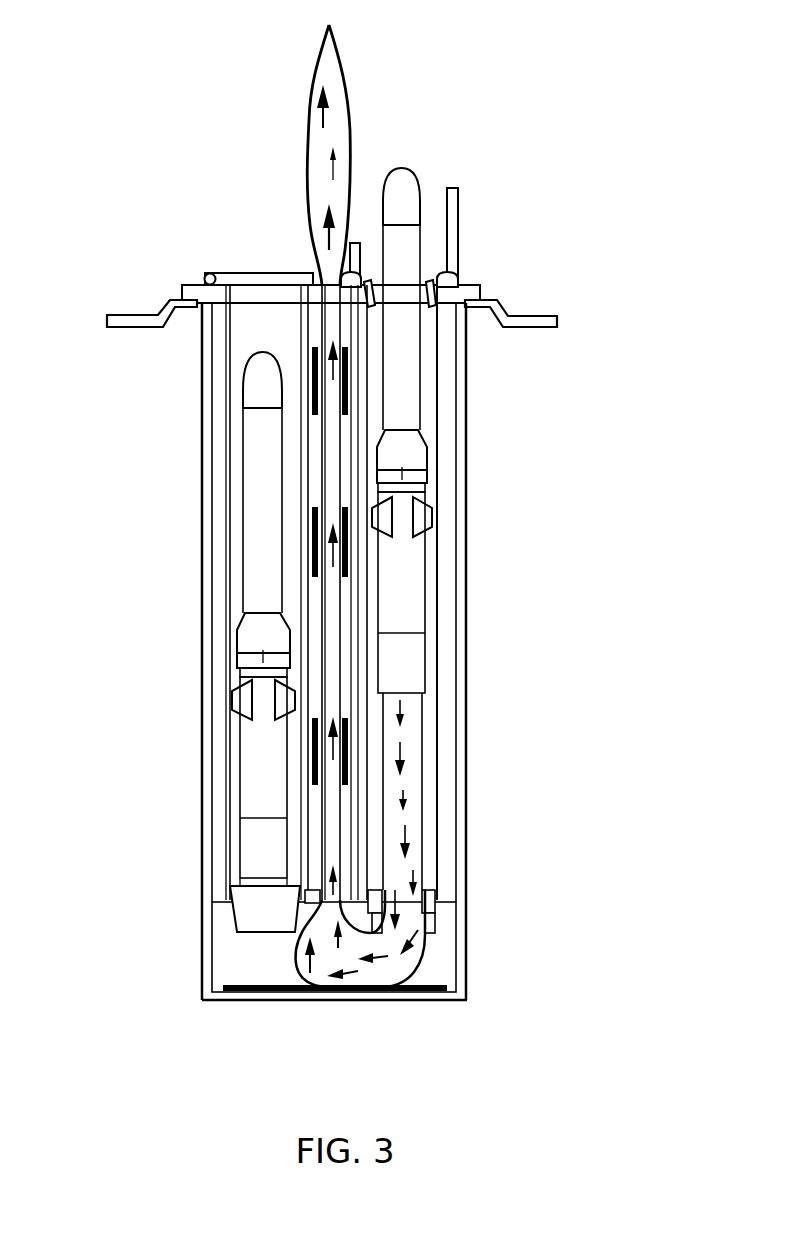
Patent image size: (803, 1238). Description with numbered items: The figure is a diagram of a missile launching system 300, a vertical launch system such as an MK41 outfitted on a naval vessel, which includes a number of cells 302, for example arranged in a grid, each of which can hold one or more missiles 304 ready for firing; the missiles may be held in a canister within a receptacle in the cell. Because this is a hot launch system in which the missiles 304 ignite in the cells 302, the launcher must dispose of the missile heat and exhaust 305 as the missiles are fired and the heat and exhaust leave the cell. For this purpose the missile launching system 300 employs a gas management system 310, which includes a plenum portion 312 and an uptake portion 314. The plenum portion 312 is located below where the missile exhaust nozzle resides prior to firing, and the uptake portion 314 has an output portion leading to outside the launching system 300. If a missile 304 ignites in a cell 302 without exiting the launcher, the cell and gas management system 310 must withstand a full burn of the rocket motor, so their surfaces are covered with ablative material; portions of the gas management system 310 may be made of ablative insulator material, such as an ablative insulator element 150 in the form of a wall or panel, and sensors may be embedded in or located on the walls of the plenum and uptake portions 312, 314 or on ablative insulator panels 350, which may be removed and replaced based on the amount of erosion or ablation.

The missile launching system 300 is at (562, 162).
The cell 302 is at (197, 415).
The missile 304 is at (265, 553).
The missile heat and exhaust 305 is at (300, 95).
The gas management system 310 is at (205, 943).
The plenum portion 312 is at (233, 969).
The uptake portion 314 is at (306, 272).
The ablative insulator panel 350 is at (312, 345).
The ablative insulator element 150 is at (437, 737).